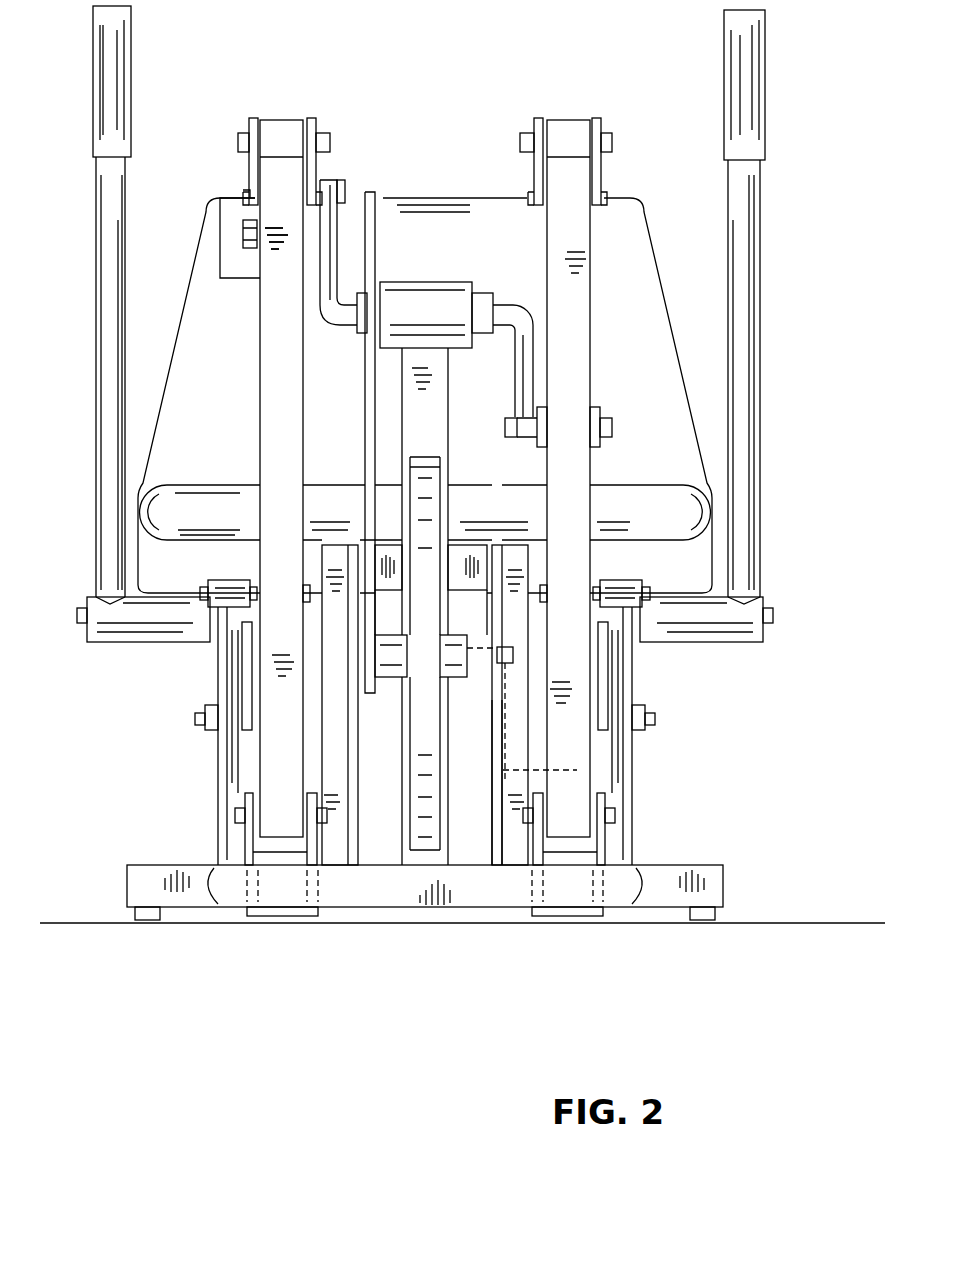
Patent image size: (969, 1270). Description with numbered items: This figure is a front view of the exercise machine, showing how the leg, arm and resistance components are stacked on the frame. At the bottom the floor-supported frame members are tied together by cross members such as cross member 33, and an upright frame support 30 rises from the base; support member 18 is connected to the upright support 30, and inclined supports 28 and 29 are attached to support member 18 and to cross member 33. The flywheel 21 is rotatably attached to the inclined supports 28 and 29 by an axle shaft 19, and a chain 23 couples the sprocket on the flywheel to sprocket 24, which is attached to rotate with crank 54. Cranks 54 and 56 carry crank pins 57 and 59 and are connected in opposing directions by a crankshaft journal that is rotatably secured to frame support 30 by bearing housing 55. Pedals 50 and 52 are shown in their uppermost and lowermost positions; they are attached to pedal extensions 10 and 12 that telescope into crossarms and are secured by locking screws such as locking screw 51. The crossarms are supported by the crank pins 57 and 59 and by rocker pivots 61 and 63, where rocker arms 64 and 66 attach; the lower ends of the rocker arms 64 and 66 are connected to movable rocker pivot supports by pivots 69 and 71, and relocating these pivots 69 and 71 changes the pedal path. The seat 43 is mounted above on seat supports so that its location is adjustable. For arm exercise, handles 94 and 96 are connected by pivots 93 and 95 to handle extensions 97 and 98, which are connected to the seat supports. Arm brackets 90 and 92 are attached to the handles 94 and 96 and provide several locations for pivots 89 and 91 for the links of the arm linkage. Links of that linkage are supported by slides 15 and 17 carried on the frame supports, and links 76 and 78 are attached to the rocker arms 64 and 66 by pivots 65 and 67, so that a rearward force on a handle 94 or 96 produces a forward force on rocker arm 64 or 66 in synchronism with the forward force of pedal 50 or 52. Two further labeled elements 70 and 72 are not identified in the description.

The pedal extension 10 is at (280, 885).
The pedal extension 12 is at (572, 892).
The slide 15 is at (212, 872).
The slide 17 is at (638, 872).
The support member 18 is at (474, 553).
The axle shaft 19 is at (482, 663).
The flywheel 21 is at (415, 470).
The chain 23 is at (367, 385).
The sprocket 24 is at (373, 192).
The inclined support 28 is at (330, 845).
The inclined support 29 is at (500, 842).
The upright frame support 30 is at (402, 422).
The cross member 33 is at (435, 907).
The seat 43 is at (160, 330).
The pedal 50 is at (222, 226).
The locking screw 51 is at (243, 232).
The pedal 52 is at (515, 722).
The crank 54 is at (320, 287).
The bearing housing 55 is at (405, 282).
The crank 56 is at (520, 376).
The crank pin 57 is at (341, 195).
The crank pin 59 is at (603, 415).
The rocker pivot 61 is at (245, 130).
The rocker pivot 63 is at (610, 130).
The rocker arm 64 is at (258, 367).
The pivot 65 is at (203, 592).
The rocker arm 66 is at (592, 348).
The pivot 67 is at (645, 592).
The pivot 69 is at (235, 813).
The left pad 70 is at (295, 910).
The pivot 71 is at (615, 818).
The right pad 72 is at (560, 915).
The link 76 is at (217, 755).
The link 78 is at (633, 770).
The pivot 89 is at (195, 718).
The arm bracket 90 is at (250, 673).
The pivot 91 is at (650, 718).
The arm bracket 92 is at (600, 685).
The pivot 93 is at (90, 612).
The handle 94 is at (95, 377).
The pivot 95 is at (765, 612).
The handle 96 is at (760, 437).
The handle extension 97 is at (85, 606).
The handle extension 98 is at (768, 606).